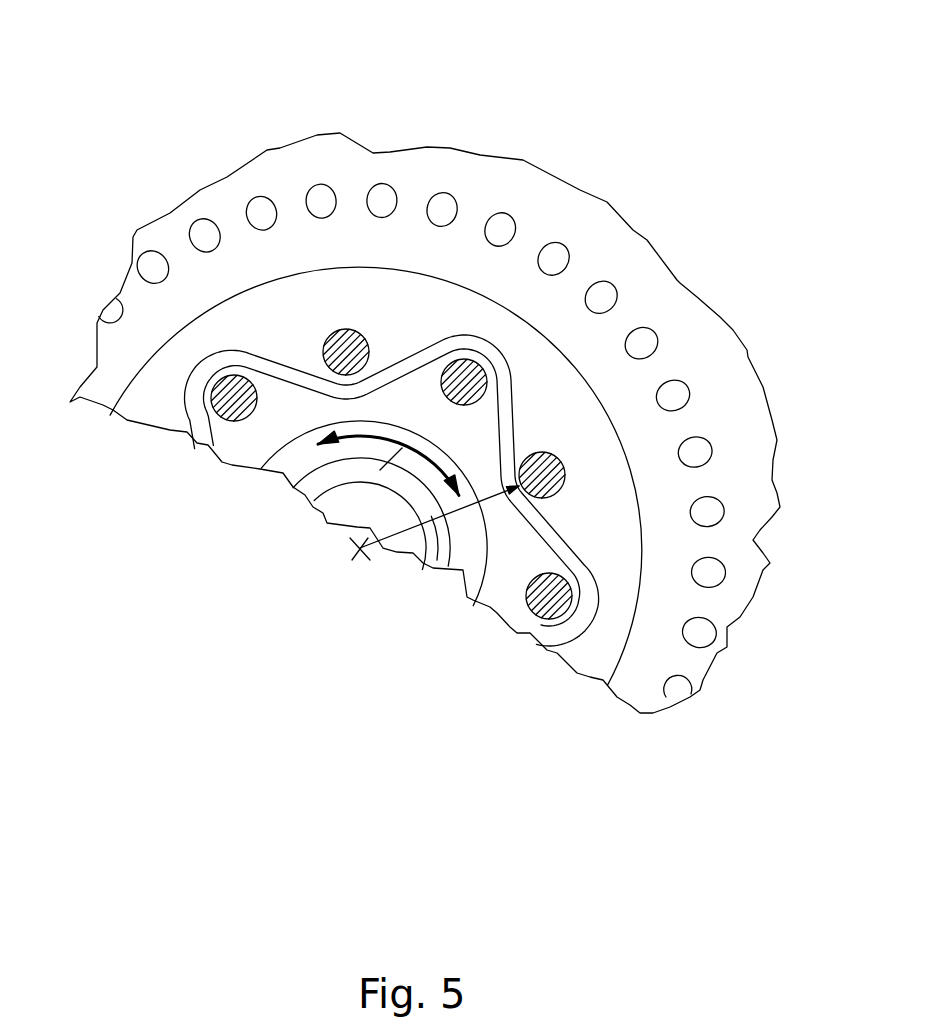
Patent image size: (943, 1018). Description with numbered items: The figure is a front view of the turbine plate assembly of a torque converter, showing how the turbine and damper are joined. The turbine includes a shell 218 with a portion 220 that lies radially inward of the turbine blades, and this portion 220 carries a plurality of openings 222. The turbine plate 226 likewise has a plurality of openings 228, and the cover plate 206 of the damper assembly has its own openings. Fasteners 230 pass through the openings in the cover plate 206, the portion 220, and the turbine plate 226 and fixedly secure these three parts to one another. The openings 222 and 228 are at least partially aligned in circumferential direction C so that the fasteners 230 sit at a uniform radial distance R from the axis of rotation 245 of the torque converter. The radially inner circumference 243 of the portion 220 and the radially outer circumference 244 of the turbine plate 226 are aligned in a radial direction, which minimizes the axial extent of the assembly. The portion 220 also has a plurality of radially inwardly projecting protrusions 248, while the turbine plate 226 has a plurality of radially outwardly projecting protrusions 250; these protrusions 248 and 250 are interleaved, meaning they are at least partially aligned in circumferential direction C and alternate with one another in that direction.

The cover plate 206 is at (322, 511).
The shell 218 is at (360, 180).
The portion 220 is at (265, 323).
The openings 222 is at (558, 460).
The turbine plate 226 is at (508, 547).
The openings 228 is at (217, 414).
The fasteners 230 is at (362, 333).
The radially inner circumference 243 is at (480, 367).
The radially outer circumference 244 is at (215, 363).
The axis of rotation 245 is at (360, 550).
The radially inwardly projecting protrusions 248 is at (328, 368).
The radially outwardly projecting protrusions 250 is at (203, 396).
The circumferential direction C is at (290, 458).
The radial distance R is at (428, 564).